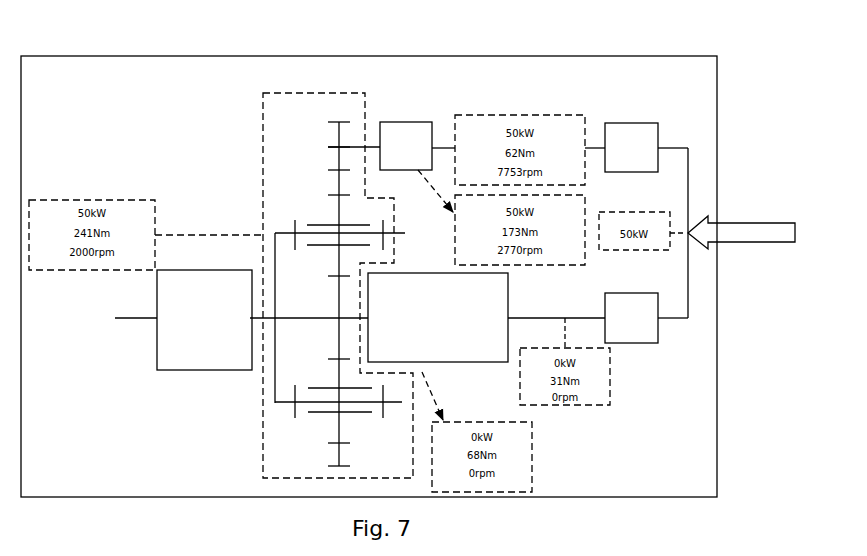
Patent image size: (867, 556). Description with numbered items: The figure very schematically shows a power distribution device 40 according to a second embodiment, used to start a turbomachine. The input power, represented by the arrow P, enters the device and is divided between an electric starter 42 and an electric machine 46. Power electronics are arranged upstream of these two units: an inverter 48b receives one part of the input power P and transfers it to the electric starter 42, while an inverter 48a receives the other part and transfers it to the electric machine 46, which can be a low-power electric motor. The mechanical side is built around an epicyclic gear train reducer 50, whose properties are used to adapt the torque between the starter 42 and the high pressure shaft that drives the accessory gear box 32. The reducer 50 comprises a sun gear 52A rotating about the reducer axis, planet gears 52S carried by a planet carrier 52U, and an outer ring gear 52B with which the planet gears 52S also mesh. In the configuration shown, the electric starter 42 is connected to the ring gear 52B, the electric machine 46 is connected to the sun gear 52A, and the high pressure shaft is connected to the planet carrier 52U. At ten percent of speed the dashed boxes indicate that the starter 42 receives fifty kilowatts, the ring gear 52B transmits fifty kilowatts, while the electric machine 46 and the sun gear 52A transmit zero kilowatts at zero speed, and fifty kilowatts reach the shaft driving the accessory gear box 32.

The power distribution device 40 is at (592, 52).
The epicyclic gear train reducer 50 is at (300, 93).
The electric starter 42 is at (413, 131).
The electric machine 46 is at (463, 343).
The inverter 48a is at (633, 332).
The inverter 48b is at (632, 132).
The accessory gear box 32 is at (175, 360).
The sun gear 52A is at (338, 319).
The outer ring gear 52B is at (332, 179).
The planet gears 52S is at (322, 208).
The planet carrier 52U is at (273, 405).
The input power P is at (767, 222).